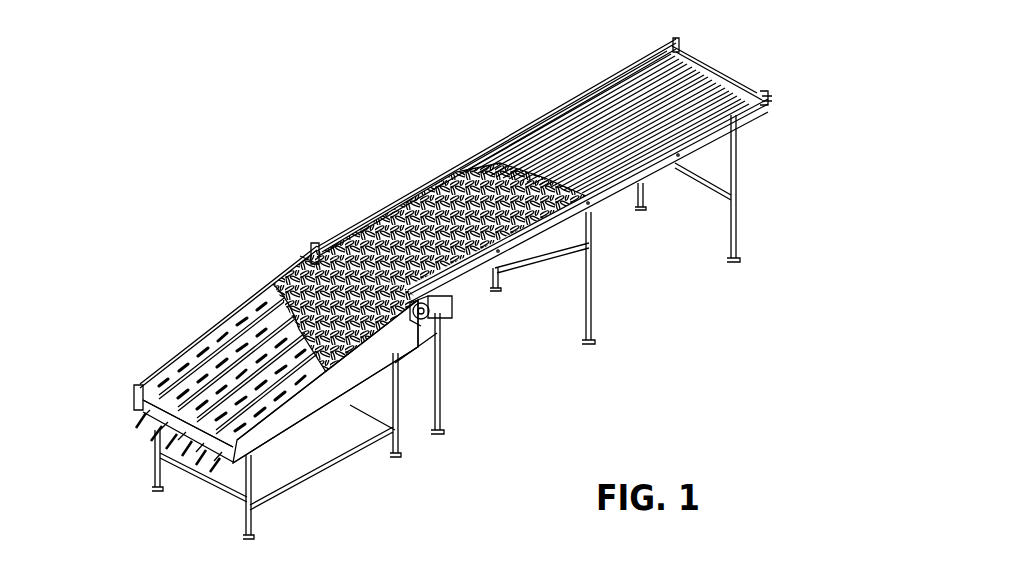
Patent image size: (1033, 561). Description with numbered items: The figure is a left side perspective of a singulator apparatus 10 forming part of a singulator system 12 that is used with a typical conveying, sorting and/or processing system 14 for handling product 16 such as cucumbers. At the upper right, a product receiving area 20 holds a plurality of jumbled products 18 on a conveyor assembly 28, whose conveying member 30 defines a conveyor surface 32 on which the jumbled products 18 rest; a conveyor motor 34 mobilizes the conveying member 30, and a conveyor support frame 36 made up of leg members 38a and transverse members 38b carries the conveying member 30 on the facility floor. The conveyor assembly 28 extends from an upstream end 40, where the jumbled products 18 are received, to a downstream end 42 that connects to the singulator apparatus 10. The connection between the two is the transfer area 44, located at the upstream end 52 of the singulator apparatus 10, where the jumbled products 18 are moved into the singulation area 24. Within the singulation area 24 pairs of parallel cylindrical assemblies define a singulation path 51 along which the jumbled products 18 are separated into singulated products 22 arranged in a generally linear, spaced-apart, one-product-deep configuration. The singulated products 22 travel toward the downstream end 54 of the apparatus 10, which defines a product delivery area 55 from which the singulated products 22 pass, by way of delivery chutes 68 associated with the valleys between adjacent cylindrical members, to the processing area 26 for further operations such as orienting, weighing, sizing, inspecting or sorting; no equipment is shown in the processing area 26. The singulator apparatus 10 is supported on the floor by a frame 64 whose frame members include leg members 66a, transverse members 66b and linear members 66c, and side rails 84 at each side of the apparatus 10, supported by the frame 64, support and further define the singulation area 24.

The singulator apparatus 10 is at (233, 305).
The singulator system 12 is at (160, 240).
The conveying, sorting and/or processing system 14 is at (337, 197).
The product 16 is at (465, 176).
The jumbled products 18 is at (437, 212).
The product receiving area 20 is at (547, 92).
The singulated products 22 is at (190, 372).
The singulation area 24 is at (243, 280).
The processing area 26 is at (78, 453).
The conveyor assembly 28 is at (517, 127).
The conveying member 30 is at (650, 110).
The conveyor surface 32 is at (610, 117).
The conveyor motor 34 is at (452, 312).
The conveyor support frame 36 is at (598, 302).
The leg members 38a is at (736, 166).
The transverse members 38b is at (703, 190).
The upstream end 40 is at (773, 108).
The downstream end 42 is at (313, 247).
The transfer area 44 is at (303, 258).
The singulation path 51 is at (243, 373).
The upstream end of singulator apparatus 52 is at (418, 334).
The downstream end of singulator apparatus 54 is at (125, 390).
The product delivery area 55 is at (118, 418).
The frame 64 is at (300, 492).
The leg members 66a is at (253, 520).
The transverse members 66b is at (200, 482).
The linear members 66c is at (310, 477).
The delivery chute 68 is at (157, 430).
The side rails 84 is at (188, 363).